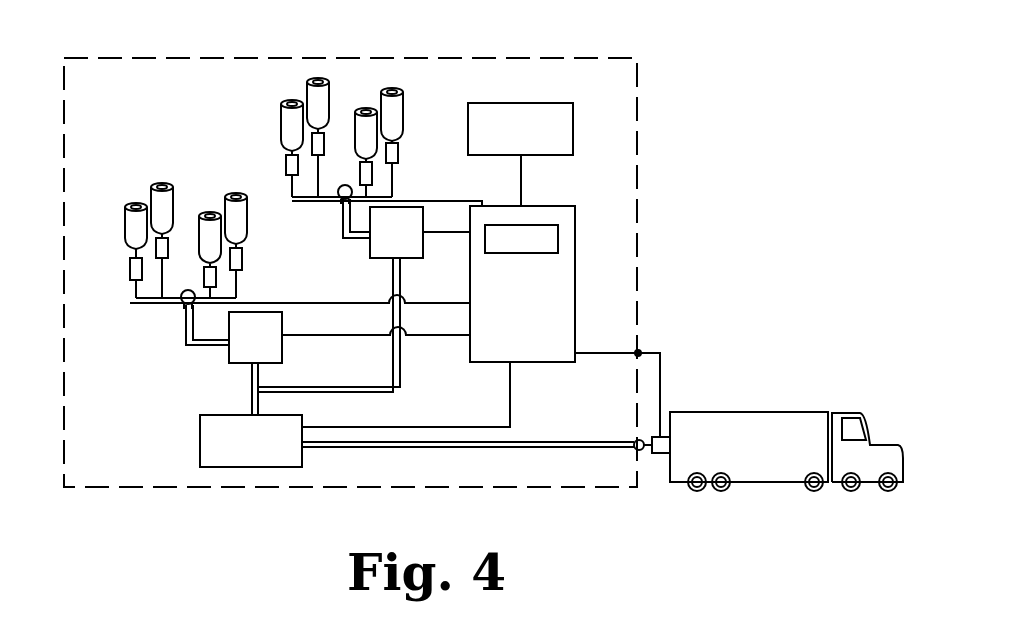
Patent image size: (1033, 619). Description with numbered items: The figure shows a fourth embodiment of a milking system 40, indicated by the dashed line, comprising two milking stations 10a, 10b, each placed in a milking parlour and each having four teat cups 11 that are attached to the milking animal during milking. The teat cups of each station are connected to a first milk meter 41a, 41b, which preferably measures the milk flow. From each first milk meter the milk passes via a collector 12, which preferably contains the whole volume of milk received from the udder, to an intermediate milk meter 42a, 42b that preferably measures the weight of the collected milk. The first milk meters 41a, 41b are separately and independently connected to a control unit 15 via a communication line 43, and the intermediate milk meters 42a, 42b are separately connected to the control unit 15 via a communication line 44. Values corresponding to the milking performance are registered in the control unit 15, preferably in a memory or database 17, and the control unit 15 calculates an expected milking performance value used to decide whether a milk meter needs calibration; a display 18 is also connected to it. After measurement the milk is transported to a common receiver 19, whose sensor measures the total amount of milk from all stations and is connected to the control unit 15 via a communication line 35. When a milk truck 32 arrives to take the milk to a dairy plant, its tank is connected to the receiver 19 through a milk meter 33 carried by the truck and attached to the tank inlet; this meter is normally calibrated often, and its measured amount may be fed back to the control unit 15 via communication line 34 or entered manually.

The milking system 40 is at (248, 58).
The milking station 10a is at (136, 186).
The milking station 10b is at (266, 98).
The teat cups 11 is at (376, 108).
The first milk meter 41a is at (133, 300).
The first milk meter 41b is at (318, 178).
The collector 12 is at (183, 303).
The intermediate milk meter 42a is at (232, 350).
The intermediate milk meter 42b is at (393, 235).
The communication line 43 is at (462, 200).
The communication line 44 is at (447, 235).
The display 18 is at (562, 125).
The control unit 15 is at (560, 318).
The memory or database 17 is at (558, 240).
The common receiver 19 is at (215, 440).
The communication line 35 is at (432, 427).
The communication line 34 is at (638, 353).
The milk truck 32 is at (757, 430).
The milk meter 33 is at (658, 450).